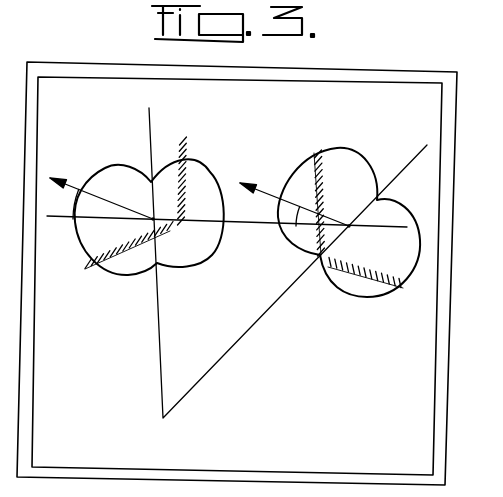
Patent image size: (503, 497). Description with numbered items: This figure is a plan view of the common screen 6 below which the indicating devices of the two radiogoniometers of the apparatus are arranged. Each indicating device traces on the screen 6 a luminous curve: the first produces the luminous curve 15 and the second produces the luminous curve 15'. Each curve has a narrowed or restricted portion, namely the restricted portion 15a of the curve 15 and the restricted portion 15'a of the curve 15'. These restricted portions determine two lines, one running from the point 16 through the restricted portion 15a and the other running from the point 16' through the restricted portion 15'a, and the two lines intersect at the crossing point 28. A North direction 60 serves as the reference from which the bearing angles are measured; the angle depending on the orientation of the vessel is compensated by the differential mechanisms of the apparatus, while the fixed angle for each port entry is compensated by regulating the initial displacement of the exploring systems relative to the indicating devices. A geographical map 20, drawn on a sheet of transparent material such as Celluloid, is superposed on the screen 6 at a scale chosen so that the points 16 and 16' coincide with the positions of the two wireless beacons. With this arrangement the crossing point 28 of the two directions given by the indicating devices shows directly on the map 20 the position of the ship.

The luminous curve 15 is at (156, 214).
The restricted portion 15a is at (150, 181).
The point representing a wireless beacon 16 is at (139, 229).
The North direction 60 is at (67, 186).
The luminous curve 15' is at (349, 212).
The restricted portion 15'a is at (349, 219).
The point representing a wireless beacon 16' is at (362, 237).
The crossing point 28 is at (164, 418).
The geographical map 20 is at (423, 384).
The screen 6 is at (442, 409).